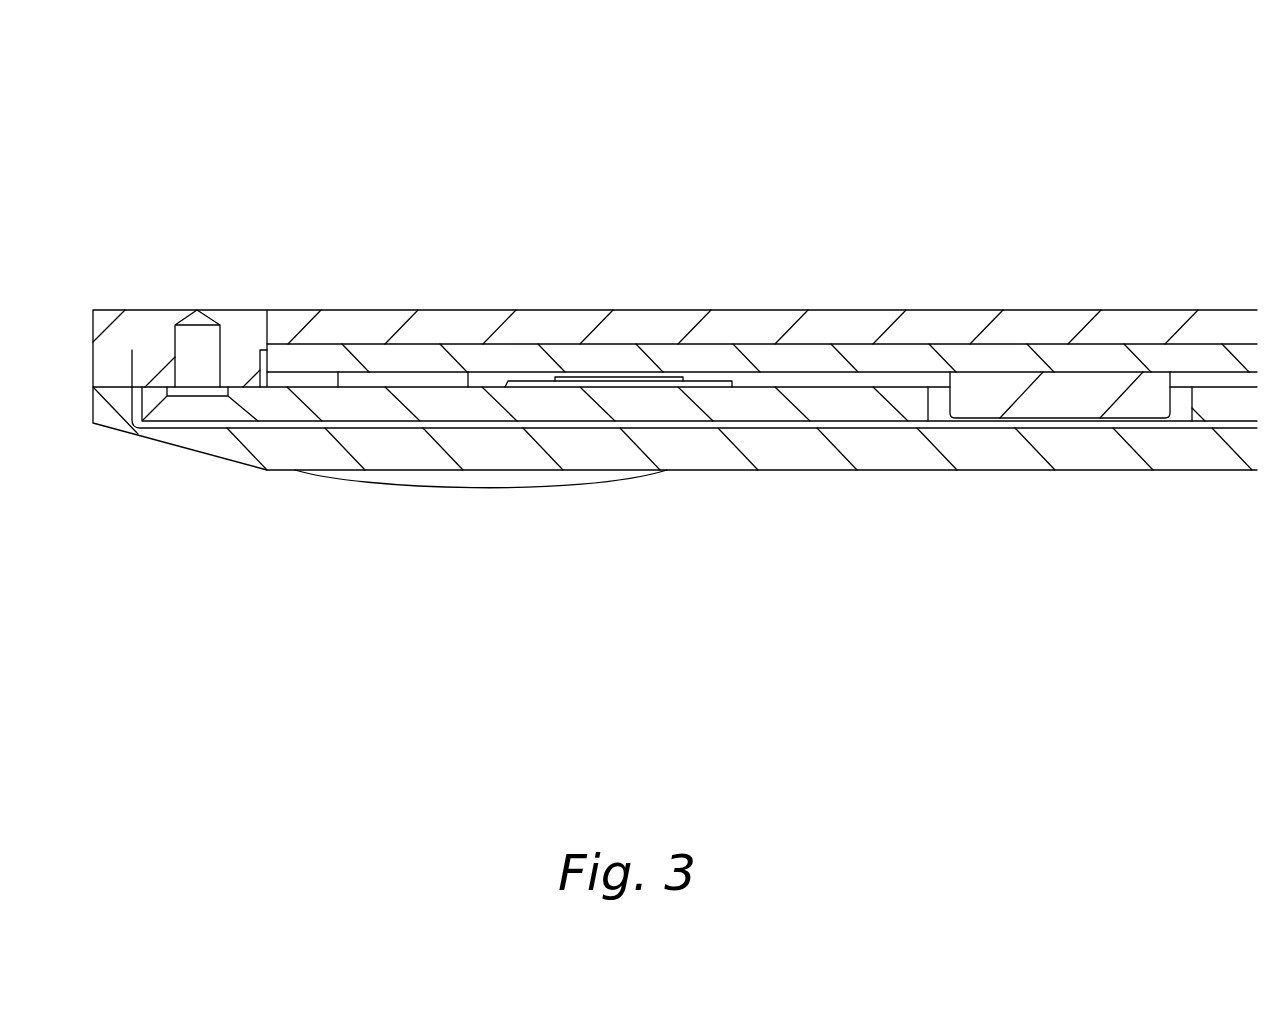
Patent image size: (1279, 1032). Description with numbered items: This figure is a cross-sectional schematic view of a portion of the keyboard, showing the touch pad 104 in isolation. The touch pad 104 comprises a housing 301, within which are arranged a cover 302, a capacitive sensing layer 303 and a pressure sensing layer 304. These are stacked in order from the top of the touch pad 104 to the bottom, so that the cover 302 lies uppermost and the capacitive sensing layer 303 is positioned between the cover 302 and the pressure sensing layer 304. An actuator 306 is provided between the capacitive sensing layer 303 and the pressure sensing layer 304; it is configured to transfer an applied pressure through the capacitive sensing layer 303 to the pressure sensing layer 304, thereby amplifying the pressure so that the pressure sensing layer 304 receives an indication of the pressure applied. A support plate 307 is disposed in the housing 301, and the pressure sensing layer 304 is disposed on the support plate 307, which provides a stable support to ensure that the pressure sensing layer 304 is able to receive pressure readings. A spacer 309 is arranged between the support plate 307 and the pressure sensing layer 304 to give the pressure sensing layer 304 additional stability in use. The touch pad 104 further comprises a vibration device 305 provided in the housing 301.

The housing 301 is at (150, 327).
The touch pad 104 is at (353, 327).
The cover 302 is at (530, 327).
The capacitive sensing layer 303 is at (808, 357).
The actuator 306 is at (640, 387).
The pressure sensing layer 304 is at (717, 387).
The spacer 309 is at (640, 387).
The support plate 307 is at (463, 407).
The vibration device 305 is at (1068, 410).